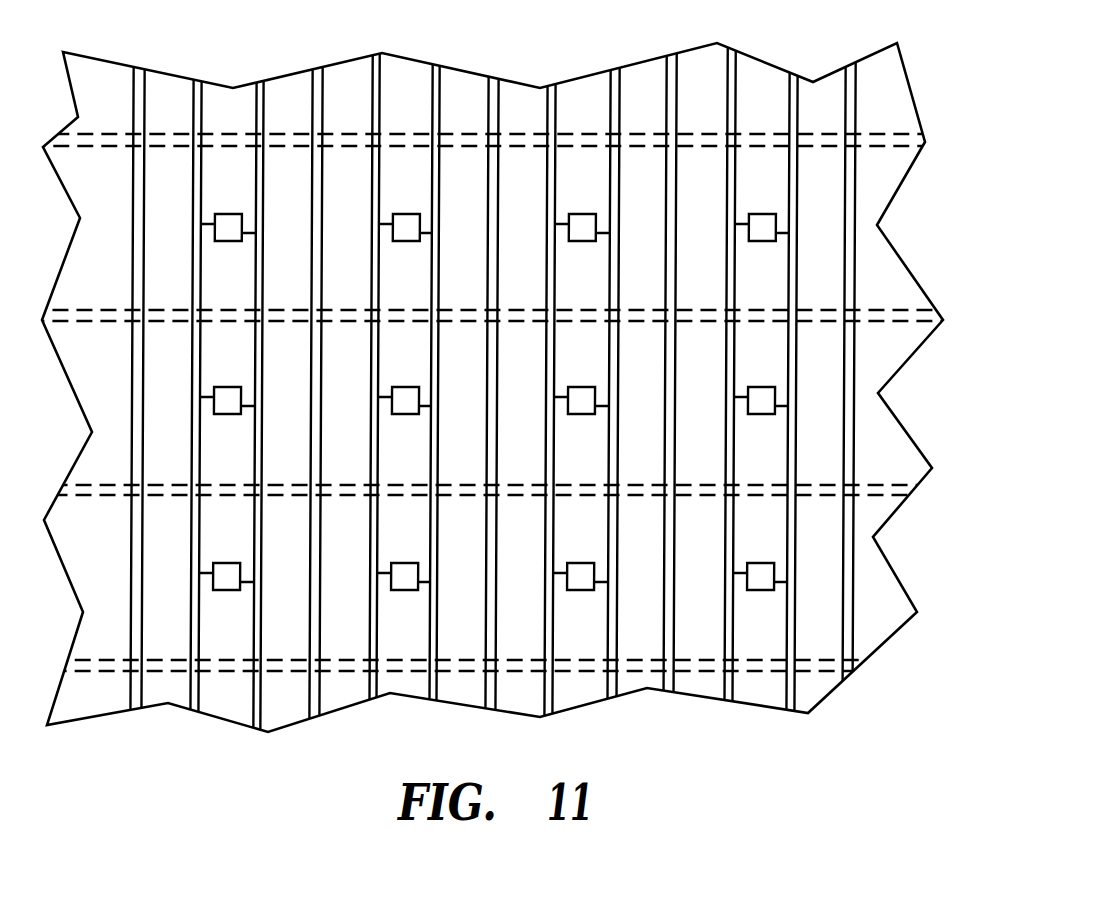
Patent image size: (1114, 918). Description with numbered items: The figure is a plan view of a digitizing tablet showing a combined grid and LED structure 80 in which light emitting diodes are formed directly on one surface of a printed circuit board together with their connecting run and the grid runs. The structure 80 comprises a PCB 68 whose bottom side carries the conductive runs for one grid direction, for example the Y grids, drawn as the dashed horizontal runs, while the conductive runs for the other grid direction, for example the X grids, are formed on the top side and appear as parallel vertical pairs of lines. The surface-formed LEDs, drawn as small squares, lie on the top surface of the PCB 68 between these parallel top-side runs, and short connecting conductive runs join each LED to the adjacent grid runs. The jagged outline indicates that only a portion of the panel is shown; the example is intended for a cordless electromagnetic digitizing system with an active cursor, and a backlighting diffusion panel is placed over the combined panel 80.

The combined grid and LED structure 80 is at (1010, 208).
The PCB 68 is at (875, 365).